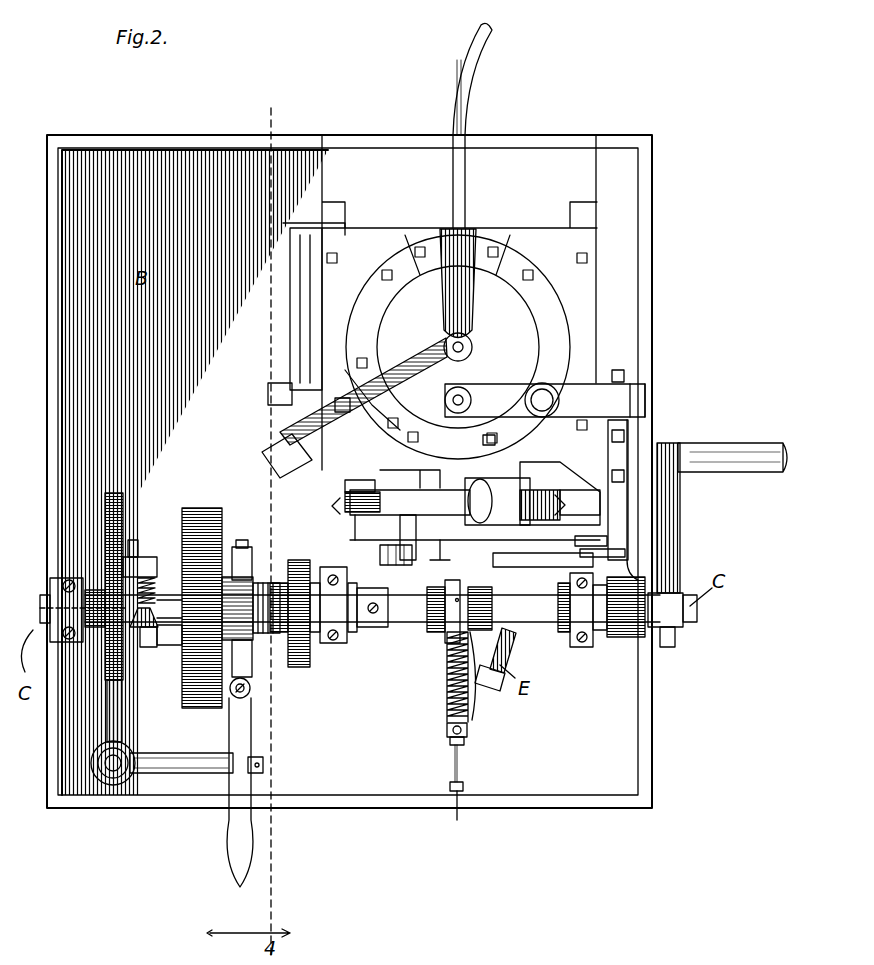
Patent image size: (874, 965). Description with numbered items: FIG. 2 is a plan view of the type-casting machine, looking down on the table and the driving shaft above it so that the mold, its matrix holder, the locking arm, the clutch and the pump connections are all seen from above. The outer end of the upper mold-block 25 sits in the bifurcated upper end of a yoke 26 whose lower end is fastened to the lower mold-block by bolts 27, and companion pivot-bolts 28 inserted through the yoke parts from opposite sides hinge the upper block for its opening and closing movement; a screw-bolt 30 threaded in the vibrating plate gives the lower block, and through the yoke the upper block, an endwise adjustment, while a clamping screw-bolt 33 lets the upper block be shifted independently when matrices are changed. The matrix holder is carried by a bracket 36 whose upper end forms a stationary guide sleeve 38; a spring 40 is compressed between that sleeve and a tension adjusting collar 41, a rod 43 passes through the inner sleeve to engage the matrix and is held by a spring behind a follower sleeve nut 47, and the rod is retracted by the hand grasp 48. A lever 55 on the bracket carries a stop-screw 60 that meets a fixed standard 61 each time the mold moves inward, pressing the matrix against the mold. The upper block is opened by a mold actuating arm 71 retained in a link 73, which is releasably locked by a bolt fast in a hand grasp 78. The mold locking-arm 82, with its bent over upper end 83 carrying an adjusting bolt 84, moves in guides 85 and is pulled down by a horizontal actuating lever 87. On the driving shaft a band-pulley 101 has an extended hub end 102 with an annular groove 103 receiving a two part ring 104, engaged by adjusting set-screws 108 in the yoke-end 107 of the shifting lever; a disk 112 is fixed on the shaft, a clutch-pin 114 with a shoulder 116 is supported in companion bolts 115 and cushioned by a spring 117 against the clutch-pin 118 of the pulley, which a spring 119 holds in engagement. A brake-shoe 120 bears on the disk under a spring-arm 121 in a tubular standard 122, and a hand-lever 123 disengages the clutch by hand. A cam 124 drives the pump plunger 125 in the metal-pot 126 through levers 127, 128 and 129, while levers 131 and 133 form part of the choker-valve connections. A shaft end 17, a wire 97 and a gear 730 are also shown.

The shaft end 17 is at (39, 657).
The upper mold-block 25 is at (475, 509).
The yoke 26 is at (550, 492).
The bolts 27 is at (580, 495).
The pivot-bolts 28 is at (490, 432).
The screw-bolt 30 is at (590, 502).
The clamping screw-bolt 33 is at (508, 468).
The bracket 36 is at (410, 630).
The stationary guide sleeve 38 is at (446, 625).
The spring 40 is at (446, 678).
The tension adjusting collar 41 is at (445, 740).
The rod 43 is at (465, 764).
The follower sleeve nut 47 is at (450, 748).
The hand grasp 48 is at (459, 815).
The lever 55 is at (548, 626).
The stop-screw 60 is at (610, 552).
The fixed standard 61 is at (612, 541).
The mold actuating arm 71 is at (380, 556).
The link 73 is at (400, 528).
The hand grasp 78 is at (365, 500).
The mold locking-arm 82 is at (345, 492).
The bent over upper end 83 is at (348, 480).
The adjusting bolt 84 is at (340, 506).
The guides 85 is at (348, 525).
The horizontal actuating lever 87 is at (333, 643).
The wire 97 is at (486, 679).
The band-pulley 101 is at (205, 520).
The extended hub end 102 is at (230, 598).
The annular groove 103 is at (195, 660).
The two part ring 104 is at (252, 578).
The yoke-end 107 is at (250, 695).
The adjusting set-screws 108 is at (242, 545).
The disk 112 is at (125, 483).
The clutch-pin 114 is at (150, 572).
The companion bolts 115 is at (140, 560).
The shoulder 116 is at (147, 647).
The spring 117 is at (158, 590).
The clutch-pin 118 is at (155, 612).
The spring 119 is at (274, 600).
The brake-shoe 120 is at (55, 578).
The spring-arm 121 is at (124, 684).
The tubular standard 122 is at (100, 752).
The hand-lever 123 is at (235, 847).
The cam 124 is at (300, 670).
The pump plunger 125 is at (465, 348).
The metal-pot 126 is at (434, 283).
The lever 127 is at (300, 352).
The lever 128 is at (285, 437).
The lever 129 is at (395, 380).
The lever 131 is at (626, 465).
The lever 133 is at (560, 400).
The gear 730 is at (628, 640).